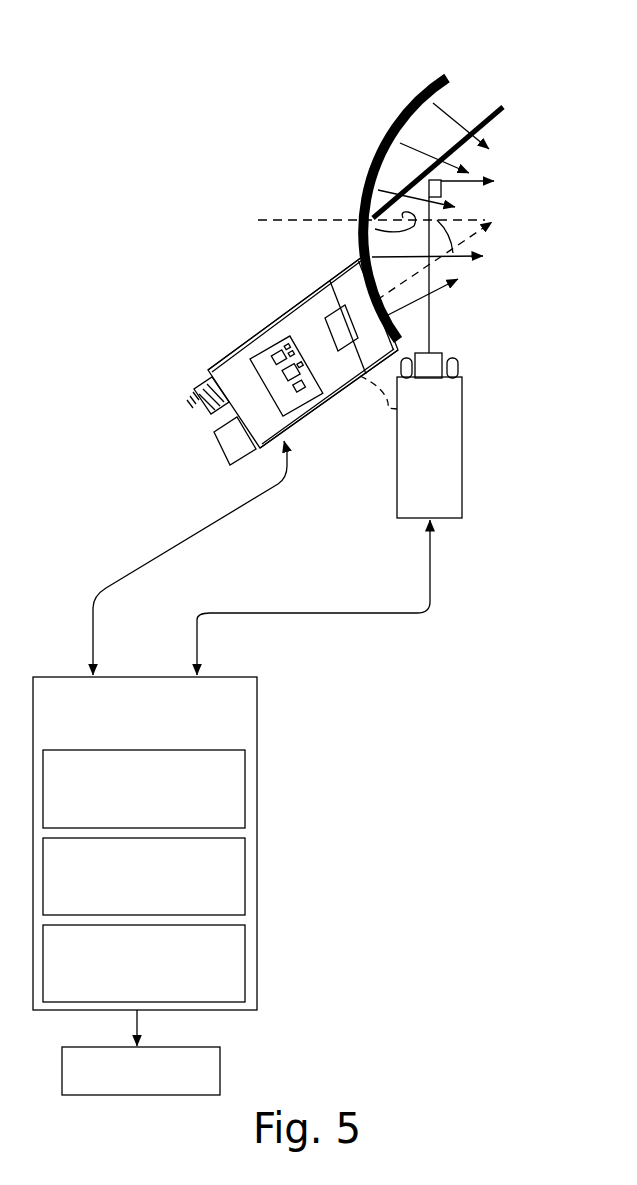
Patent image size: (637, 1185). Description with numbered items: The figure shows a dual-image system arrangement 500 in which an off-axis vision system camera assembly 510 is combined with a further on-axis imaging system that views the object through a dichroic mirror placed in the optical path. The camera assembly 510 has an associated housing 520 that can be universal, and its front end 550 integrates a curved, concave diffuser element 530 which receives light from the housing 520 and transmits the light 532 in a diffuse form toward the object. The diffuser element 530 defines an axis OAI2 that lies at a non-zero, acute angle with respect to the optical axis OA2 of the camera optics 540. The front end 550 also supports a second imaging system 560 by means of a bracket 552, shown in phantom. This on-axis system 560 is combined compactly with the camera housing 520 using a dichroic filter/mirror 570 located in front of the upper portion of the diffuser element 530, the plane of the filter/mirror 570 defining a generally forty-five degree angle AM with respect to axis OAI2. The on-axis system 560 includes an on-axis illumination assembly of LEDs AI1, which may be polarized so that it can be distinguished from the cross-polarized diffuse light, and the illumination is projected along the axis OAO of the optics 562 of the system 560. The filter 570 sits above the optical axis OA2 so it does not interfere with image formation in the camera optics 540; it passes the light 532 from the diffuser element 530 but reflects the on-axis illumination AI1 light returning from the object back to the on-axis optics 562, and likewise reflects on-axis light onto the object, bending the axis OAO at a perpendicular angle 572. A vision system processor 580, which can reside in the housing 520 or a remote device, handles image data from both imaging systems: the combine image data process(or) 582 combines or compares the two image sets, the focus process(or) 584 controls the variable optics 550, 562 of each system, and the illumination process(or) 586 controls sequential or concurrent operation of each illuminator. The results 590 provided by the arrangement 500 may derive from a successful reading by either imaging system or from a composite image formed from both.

The dual-image system arrangement 500 is at (343, 88).
The camera assembly 510 is at (233, 352).
The housing 520 is at (326, 405).
The diffuser element 530 is at (435, 80).
The light 532 is at (394, 192).
The camera optics 540 is at (300, 337).
The front end 550 is at (312, 289).
The bracket 552 is at (388, 414).
The second imaging system 560 is at (465, 481).
The optics 562 is at (442, 355).
The dichroic filter/mirror 570 is at (484, 127).
The perpendicular angle 572 is at (441, 193).
The vision system processor 580 is at (259, 703).
The combine image data process(or) 582 is at (245, 780).
The focus process(or) 584 is at (245, 868).
The illumination process(or) 586 is at (245, 950).
The results 590 is at (220, 1070).
The diffuser axis OAI2 is at (318, 218).
The mirror angle AM is at (365, 238).
The optical axis OA2 is at (478, 236).
The on-axis optical axis OAO is at (430, 312).
The on-axis illumination LEDs AI1 is at (458, 370).